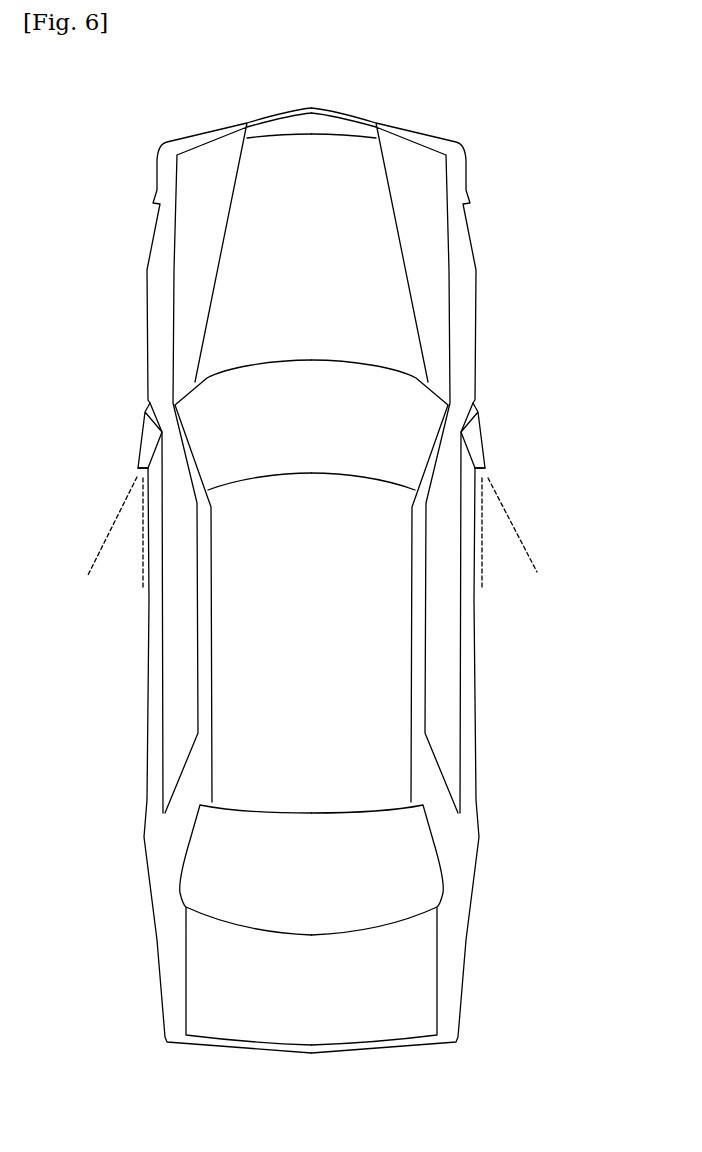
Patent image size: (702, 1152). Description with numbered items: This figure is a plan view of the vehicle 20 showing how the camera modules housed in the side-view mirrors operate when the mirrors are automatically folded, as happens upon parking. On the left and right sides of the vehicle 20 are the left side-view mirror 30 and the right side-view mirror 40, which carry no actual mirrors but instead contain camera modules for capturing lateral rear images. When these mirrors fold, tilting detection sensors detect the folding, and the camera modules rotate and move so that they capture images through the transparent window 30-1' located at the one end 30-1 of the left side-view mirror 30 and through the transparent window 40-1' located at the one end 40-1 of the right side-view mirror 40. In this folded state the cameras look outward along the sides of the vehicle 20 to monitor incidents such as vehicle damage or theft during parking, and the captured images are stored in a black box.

The vehicle 20 is at (503, 753).
The left side-view mirror 30 is at (138, 432).
The one end of the left side-view mirror 30-1 is at (89, 482).
The transparent window of the left side-view mirror 30-1' is at (90, 532).
The right side-view mirror 40 is at (478, 432).
The one end of the right side-view mirror 40-1 is at (534, 482).
The transparent window of the right side-view mirror 40-1' is at (533, 534).